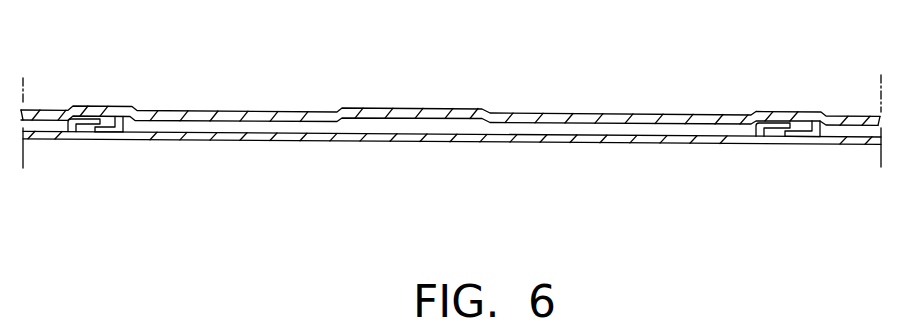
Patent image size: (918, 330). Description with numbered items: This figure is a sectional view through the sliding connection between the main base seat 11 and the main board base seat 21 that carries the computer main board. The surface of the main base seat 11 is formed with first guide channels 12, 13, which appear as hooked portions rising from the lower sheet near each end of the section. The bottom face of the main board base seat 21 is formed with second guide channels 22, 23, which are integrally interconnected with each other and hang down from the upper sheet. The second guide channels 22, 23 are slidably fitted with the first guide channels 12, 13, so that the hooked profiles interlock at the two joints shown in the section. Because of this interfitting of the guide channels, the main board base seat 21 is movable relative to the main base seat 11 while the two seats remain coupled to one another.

The main base seat 11 is at (429, 143).
The main board base seat 21 is at (425, 116).
The first guide channel 12 is at (100, 106).
The second guide channel 22 is at (106, 132).
The first guide channel 13 is at (789, 122).
The second guide channel 23 is at (775, 143).